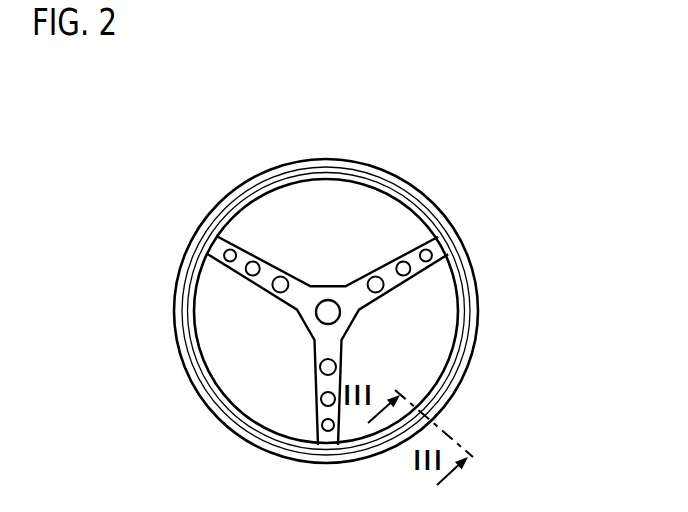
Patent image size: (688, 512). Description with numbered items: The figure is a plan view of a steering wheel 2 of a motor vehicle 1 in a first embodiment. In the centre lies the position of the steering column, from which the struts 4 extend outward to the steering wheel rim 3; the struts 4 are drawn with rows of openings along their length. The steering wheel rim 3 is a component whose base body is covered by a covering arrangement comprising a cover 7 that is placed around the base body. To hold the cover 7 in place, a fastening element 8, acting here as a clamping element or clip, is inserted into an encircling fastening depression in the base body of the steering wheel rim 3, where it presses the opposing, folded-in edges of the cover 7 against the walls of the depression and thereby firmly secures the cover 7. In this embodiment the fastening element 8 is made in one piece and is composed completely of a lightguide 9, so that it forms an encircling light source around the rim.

The motor vehicle 1 is at (313, 312).
The steering wheel 2 is at (157, 228).
The steering wheel rim 3 is at (250, 175).
The struts 4 is at (267, 272).
The cover 7 is at (473, 285).
The fastening element 8 is at (375, 164).
The lightguide 9 is at (473, 348).